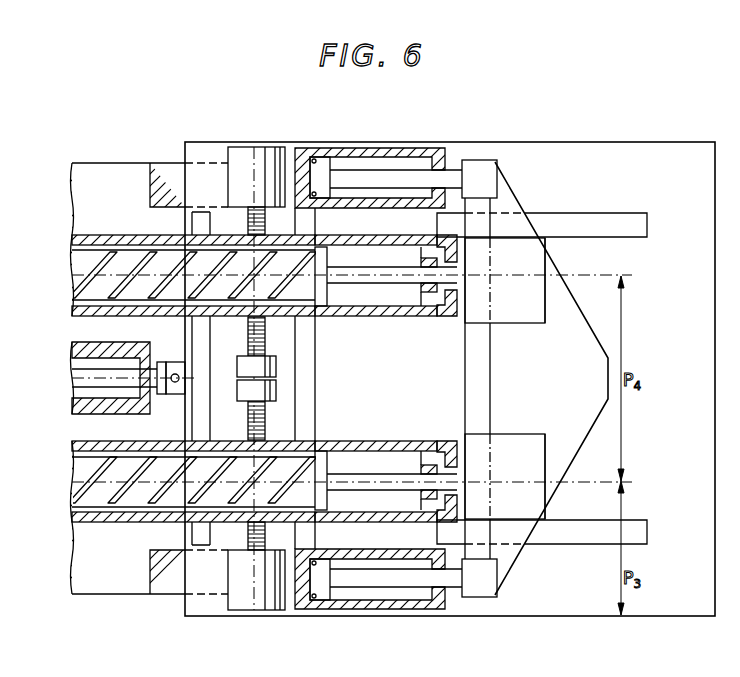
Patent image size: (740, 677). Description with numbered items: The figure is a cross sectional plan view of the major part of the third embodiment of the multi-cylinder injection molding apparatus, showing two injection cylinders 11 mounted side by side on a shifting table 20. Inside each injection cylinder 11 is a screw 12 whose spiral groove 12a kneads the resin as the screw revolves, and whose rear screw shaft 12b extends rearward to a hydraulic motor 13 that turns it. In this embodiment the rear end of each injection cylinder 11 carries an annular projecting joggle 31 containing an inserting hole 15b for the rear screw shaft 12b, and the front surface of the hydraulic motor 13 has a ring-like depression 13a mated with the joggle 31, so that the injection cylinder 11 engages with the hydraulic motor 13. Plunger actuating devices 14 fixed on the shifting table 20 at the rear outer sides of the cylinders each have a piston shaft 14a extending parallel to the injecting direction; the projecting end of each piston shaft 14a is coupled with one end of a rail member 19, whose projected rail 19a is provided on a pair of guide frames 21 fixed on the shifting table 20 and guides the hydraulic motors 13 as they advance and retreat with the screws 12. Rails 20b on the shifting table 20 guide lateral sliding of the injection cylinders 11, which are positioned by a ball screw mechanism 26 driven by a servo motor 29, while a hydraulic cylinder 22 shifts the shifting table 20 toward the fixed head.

The injection cylinder 11 is at (124, 236).
The screw 12 is at (324, 302).
The spiral groove 12a is at (138, 295).
The rear screw shaft 12b is at (390, 285).
The hydraulic motor 13 is at (530, 324).
The ring-like depression 13a is at (466, 297).
The plunger actuating device 14 is at (372, 148).
The piston shaft 14a is at (456, 170).
The inserting hole 15b is at (430, 302).
The rail member 19 is at (557, 389).
The projected rail 19a is at (491, 380).
The shifting table 20 is at (548, 142).
The rail 20b is at (316, 380).
The guide frame 21 is at (610, 214).
The hydraulic cylinder 22 is at (72, 354).
The ball screw mechanism 26 is at (260, 350).
The servo motor 29 is at (262, 147).
The annular projecting joggle 31 is at (440, 250).